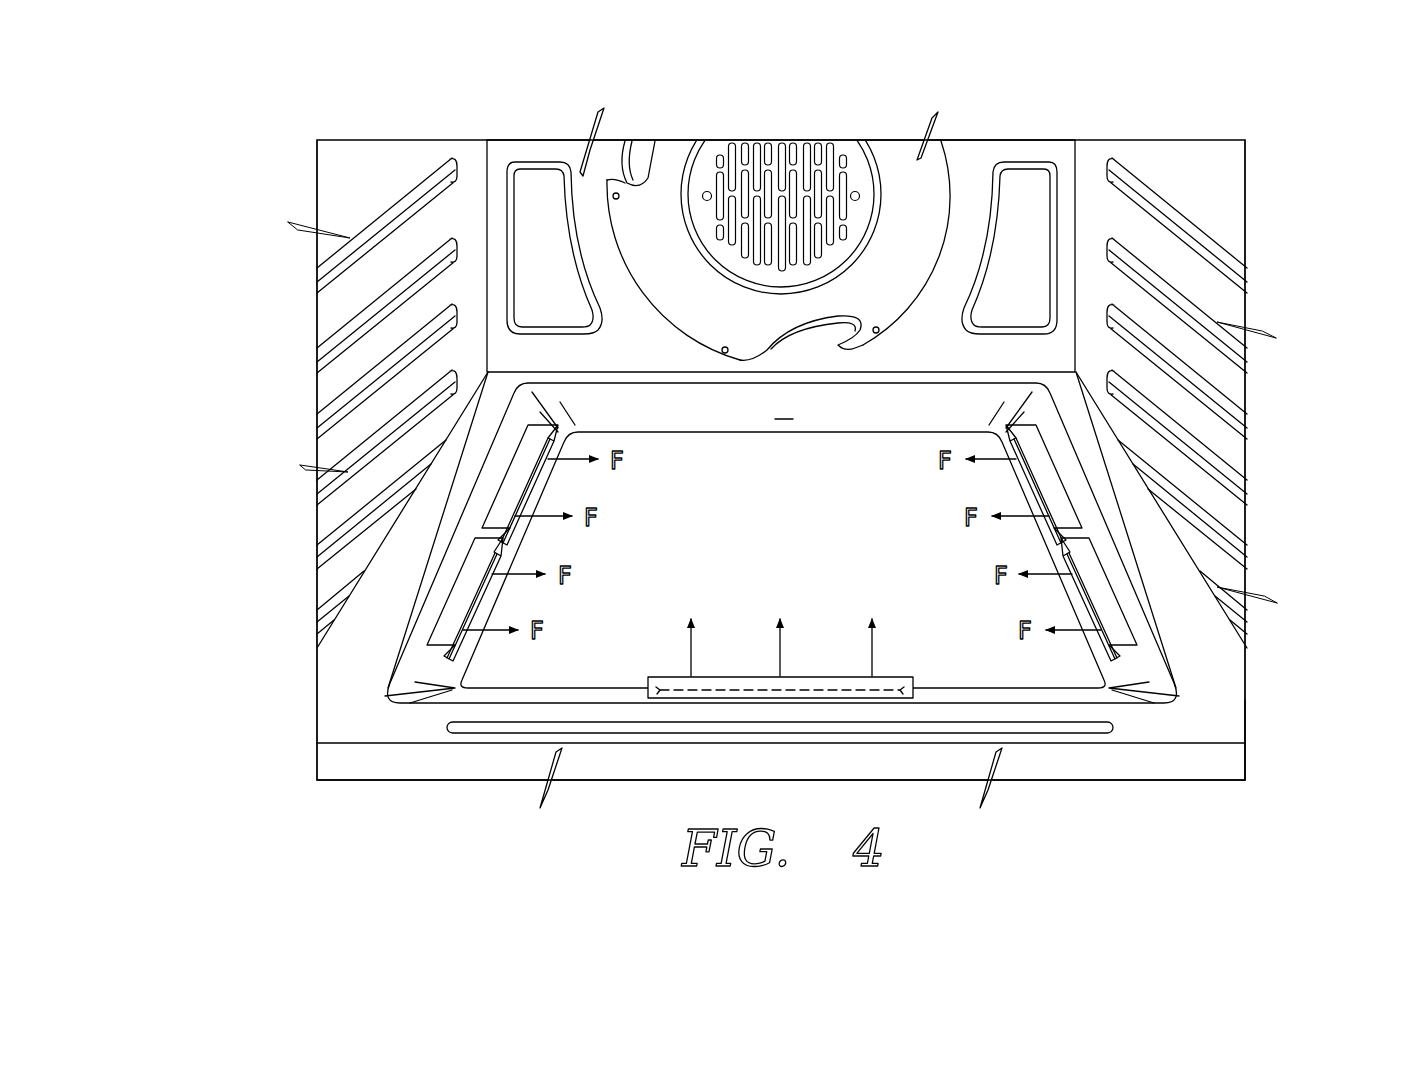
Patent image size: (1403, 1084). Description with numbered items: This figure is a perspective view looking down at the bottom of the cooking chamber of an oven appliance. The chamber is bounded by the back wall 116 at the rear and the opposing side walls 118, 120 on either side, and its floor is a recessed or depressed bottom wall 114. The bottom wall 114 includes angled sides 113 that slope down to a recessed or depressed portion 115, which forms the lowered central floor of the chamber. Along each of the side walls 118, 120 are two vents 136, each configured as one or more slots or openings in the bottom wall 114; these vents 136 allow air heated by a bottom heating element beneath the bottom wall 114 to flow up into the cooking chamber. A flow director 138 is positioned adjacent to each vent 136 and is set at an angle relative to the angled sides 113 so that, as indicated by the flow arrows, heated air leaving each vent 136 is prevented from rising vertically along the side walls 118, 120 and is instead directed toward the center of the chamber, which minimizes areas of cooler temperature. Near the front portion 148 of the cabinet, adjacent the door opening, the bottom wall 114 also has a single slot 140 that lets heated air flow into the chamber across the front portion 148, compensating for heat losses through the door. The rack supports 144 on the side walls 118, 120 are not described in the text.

The angled sides 113 is at (698, 408).
The bottom wall 114 is at (350, 677).
The recessed portion 115 is at (805, 518).
The back wall 116 is at (543, 152).
The side wall 118 is at (345, 192).
The side wall 120 is at (1216, 192).
The vent 136 is at (545, 483).
The flow director 138 is at (522, 472).
The slot 140 is at (490, 734).
The rack support rails 144 is at (330, 380).
The front portion 148 is at (1266, 733).